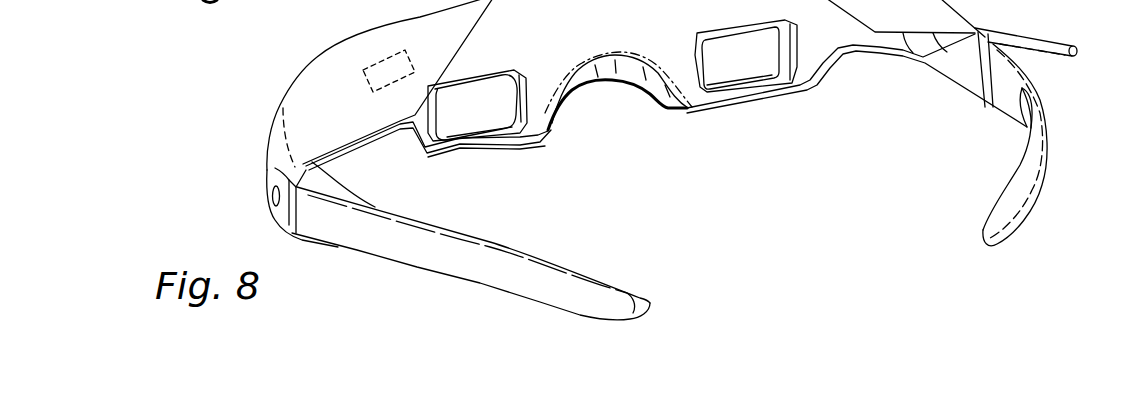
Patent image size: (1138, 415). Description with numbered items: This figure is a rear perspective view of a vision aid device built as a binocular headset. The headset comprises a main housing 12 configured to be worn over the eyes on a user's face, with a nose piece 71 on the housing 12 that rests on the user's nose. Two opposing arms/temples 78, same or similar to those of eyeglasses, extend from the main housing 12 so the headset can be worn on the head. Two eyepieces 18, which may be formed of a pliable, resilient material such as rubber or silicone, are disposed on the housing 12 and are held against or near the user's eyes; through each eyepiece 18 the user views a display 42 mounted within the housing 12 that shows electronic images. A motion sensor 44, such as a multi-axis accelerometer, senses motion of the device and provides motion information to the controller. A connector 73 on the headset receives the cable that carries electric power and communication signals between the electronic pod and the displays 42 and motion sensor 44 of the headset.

The housing 12 is at (402, 40).
The motion sensor 44 is at (372, 65).
The eyepiece 18 is at (513, 118).
The display 42 is at (470, 118).
The nose piece 71 is at (626, 78).
The connector 73 is at (1040, 35).
The arms/temples 78 is at (453, 267).